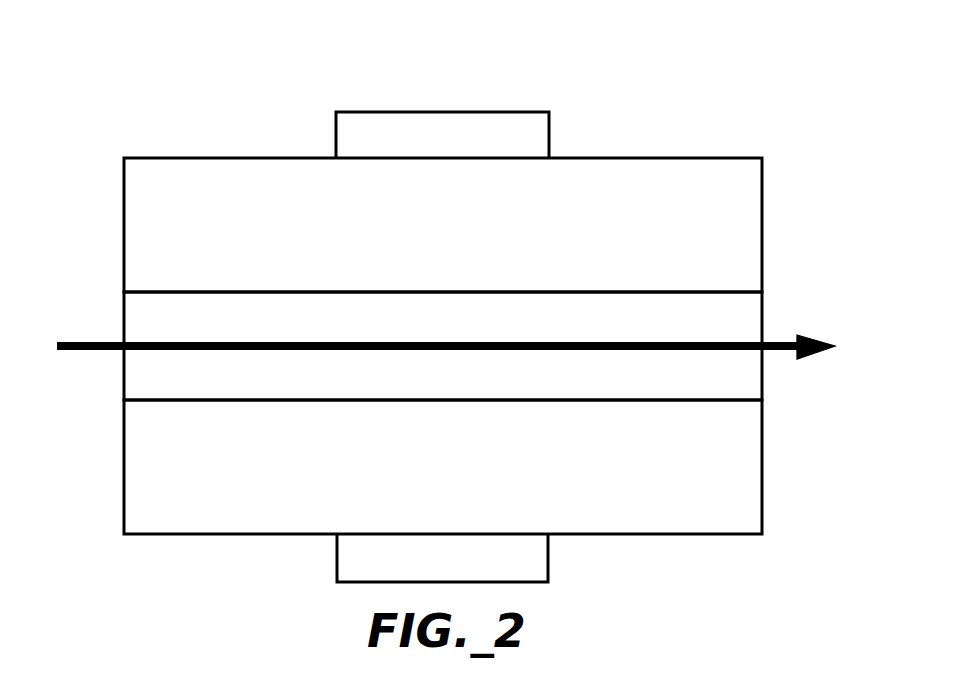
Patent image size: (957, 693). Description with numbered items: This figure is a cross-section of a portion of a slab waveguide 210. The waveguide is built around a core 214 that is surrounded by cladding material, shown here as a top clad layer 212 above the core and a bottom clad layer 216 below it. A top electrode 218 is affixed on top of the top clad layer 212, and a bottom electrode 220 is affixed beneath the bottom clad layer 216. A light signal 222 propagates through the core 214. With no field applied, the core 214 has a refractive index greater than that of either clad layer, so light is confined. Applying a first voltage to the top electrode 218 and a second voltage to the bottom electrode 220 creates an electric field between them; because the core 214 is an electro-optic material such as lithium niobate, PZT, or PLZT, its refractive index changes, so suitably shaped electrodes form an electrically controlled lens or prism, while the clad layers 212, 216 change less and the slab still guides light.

The optical device / laser structure 210 is at (688, 68).
The top clad layer 212 is at (755, 207).
The core 214 is at (755, 320).
The bottom clad layer 216 is at (755, 490).
The top electrode 218 is at (540, 137).
The bottom electrode 220 is at (540, 563).
The light signal 222 is at (96, 340).